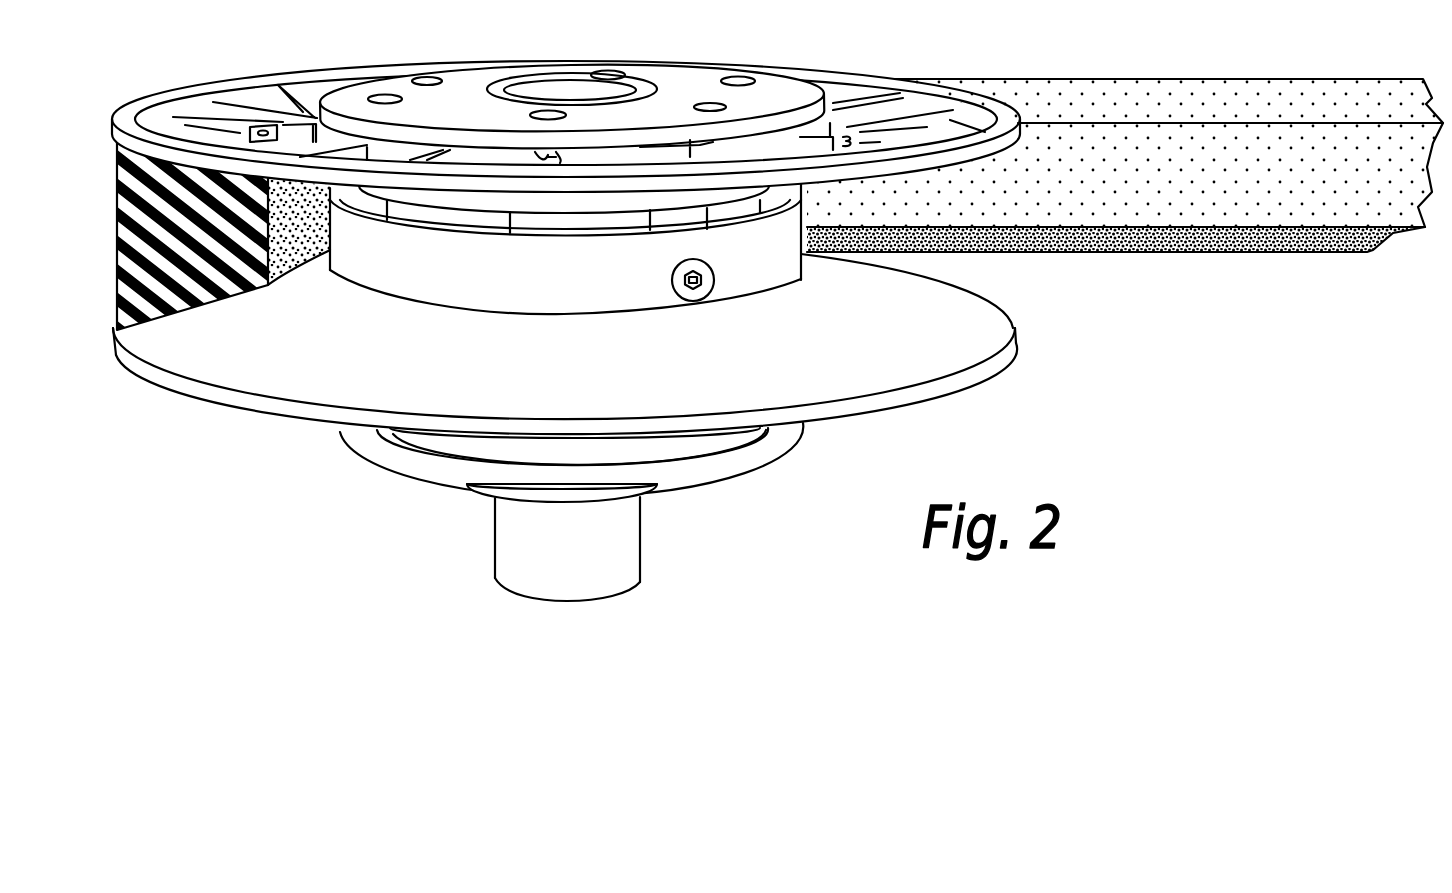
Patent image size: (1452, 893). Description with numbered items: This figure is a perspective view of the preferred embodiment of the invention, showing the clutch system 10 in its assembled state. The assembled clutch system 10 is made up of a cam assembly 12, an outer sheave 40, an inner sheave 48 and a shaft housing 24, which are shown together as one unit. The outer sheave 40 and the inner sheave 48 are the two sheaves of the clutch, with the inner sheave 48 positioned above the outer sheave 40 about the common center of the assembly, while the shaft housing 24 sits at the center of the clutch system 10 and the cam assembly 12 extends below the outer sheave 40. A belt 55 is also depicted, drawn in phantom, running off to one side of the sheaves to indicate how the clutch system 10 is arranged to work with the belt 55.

The clutch system 10 is at (665, 305).
The cam assembly 12 is at (613, 543).
The shaft housing 24 is at (657, 88).
The outer sheave 40 is at (977, 318).
The inner sheave 48 is at (847, 90).
The belt 55 is at (1302, 92).